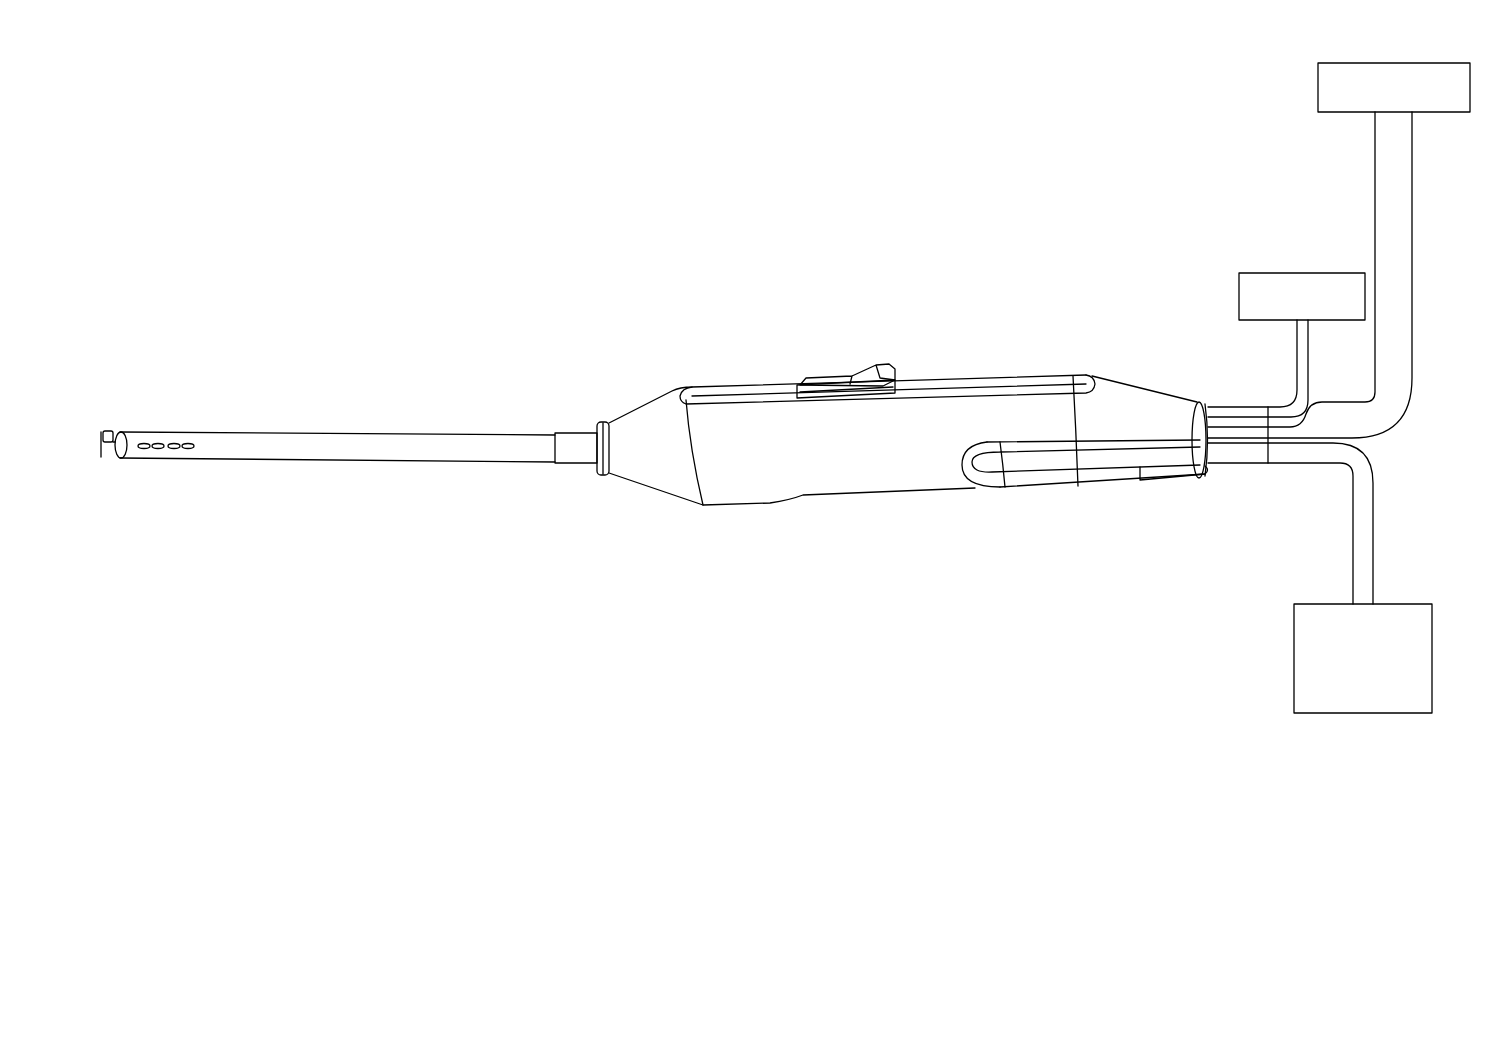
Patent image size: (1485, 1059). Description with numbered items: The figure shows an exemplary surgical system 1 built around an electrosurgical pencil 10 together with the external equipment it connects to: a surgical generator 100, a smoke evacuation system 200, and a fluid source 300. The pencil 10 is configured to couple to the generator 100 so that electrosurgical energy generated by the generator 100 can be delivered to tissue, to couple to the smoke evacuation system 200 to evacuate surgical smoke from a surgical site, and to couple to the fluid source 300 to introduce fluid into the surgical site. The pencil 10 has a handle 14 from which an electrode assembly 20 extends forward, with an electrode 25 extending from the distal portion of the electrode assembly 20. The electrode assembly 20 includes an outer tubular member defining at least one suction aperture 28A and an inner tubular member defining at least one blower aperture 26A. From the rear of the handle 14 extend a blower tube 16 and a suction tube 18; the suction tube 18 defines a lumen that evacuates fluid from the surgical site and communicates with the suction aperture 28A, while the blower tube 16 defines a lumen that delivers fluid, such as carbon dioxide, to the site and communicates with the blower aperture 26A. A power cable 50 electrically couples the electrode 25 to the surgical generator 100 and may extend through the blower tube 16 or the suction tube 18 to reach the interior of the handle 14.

The surgical system 1 is at (653, 556).
The electrosurgical pencil 10 is at (618, 253).
The handle 14 is at (987, 373).
The blower tube 16 is at (1210, 407).
The suction tube 18 is at (1243, 457).
The electrode assembly 20 is at (278, 429).
The electrode 25 is at (108, 427).
The blower aperture 26A is at (122, 457).
The suction aperture 28A is at (175, 453).
The power cable 50 is at (1253, 418).
The surgical generator 100 is at (1302, 273).
The smoke evacuation system 200 is at (1294, 660).
The fluid source 300 is at (1380, 63).